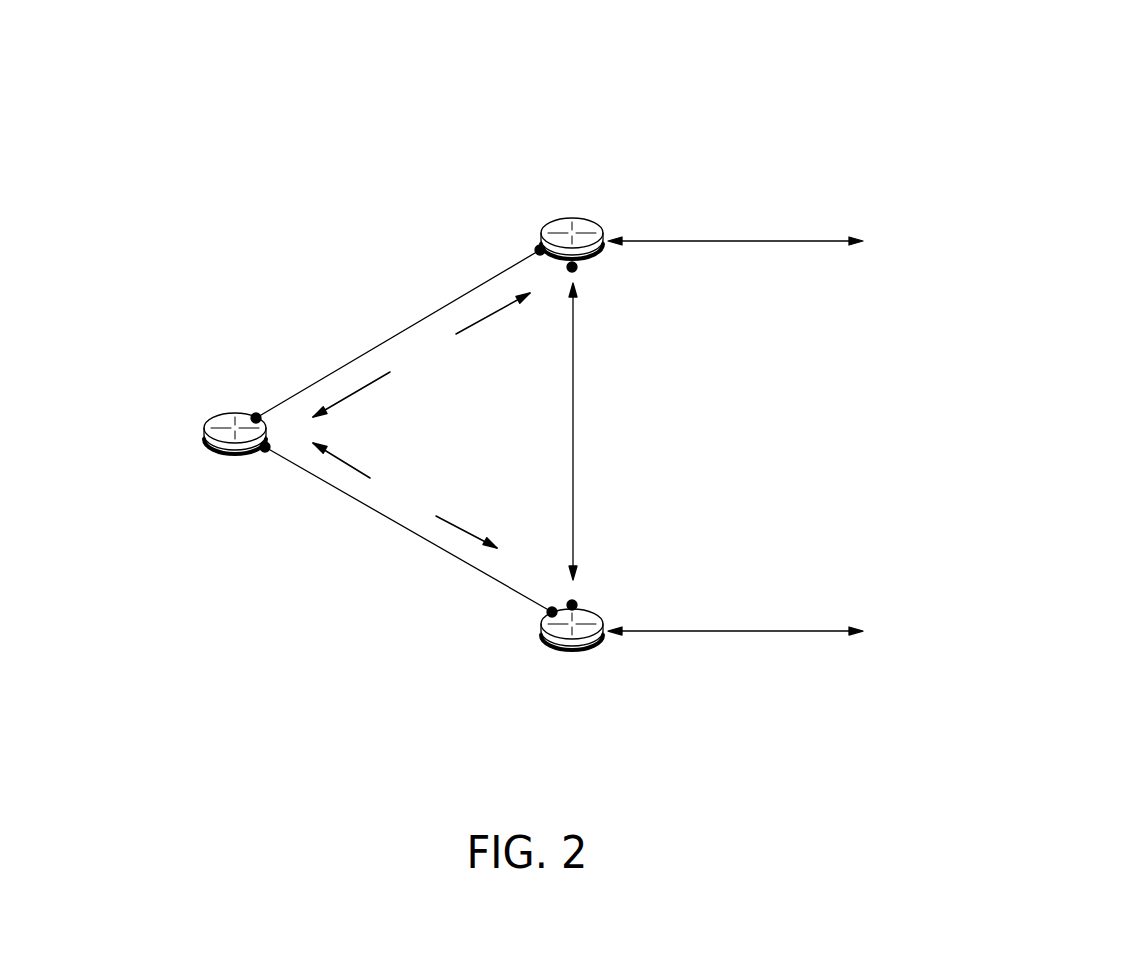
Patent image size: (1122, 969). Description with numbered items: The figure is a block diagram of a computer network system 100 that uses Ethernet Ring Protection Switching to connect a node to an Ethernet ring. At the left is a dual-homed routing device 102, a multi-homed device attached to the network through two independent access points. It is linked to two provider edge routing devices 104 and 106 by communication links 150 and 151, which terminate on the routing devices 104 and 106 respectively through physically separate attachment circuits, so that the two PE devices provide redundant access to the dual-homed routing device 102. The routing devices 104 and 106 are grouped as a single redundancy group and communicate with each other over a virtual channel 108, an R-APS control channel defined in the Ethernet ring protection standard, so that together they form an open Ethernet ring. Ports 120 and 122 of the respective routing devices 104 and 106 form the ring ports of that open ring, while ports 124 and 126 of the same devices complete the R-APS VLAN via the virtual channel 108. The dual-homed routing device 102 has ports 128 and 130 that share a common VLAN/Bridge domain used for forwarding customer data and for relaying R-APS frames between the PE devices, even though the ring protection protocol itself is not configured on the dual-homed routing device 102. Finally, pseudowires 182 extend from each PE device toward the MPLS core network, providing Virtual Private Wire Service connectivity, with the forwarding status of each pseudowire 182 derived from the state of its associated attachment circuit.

The computer network system 100 is at (1038, 60).
The dual-homed routing device 102 is at (198, 422).
The routing device 104 is at (597, 209).
The routing device 106 is at (536, 656).
The virtual channel 108 is at (586, 427).
The port 120 is at (532, 237).
The port 122 is at (560, 595).
The port 124 is at (585, 284).
The port 126 is at (591, 599).
The port 128 is at (262, 401).
The port 130 is at (265, 468).
The communication link 150 is at (401, 322).
The communication link 151 is at (393, 536).
The pseudowire 182 is at (740, 229).